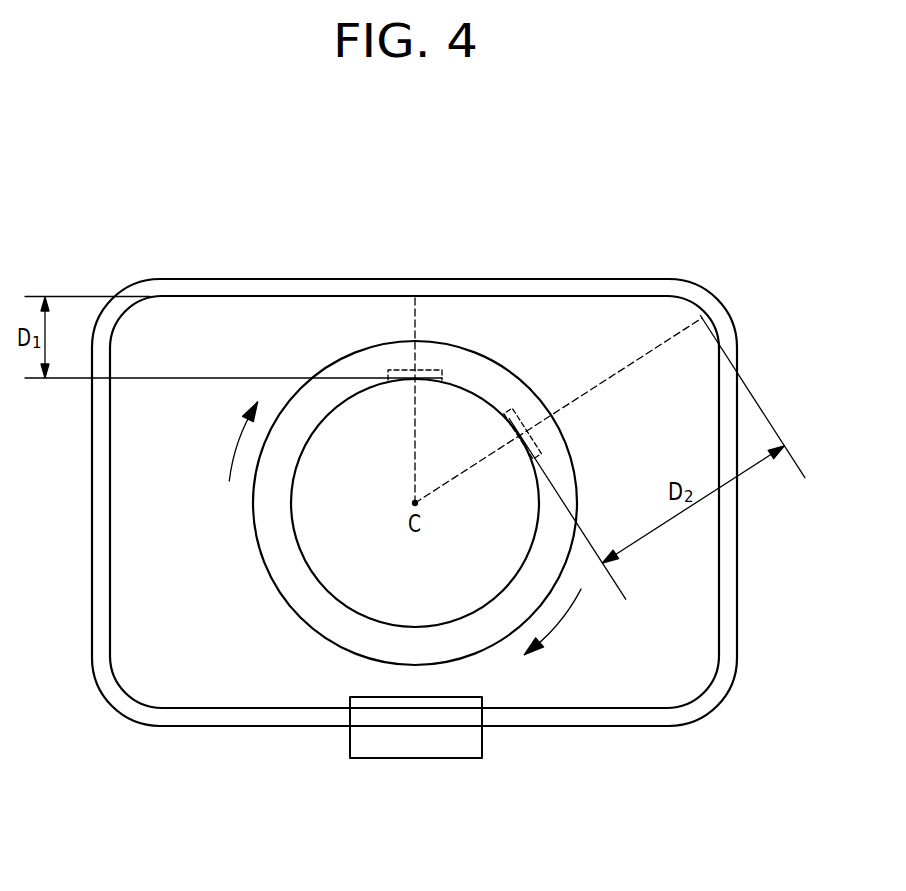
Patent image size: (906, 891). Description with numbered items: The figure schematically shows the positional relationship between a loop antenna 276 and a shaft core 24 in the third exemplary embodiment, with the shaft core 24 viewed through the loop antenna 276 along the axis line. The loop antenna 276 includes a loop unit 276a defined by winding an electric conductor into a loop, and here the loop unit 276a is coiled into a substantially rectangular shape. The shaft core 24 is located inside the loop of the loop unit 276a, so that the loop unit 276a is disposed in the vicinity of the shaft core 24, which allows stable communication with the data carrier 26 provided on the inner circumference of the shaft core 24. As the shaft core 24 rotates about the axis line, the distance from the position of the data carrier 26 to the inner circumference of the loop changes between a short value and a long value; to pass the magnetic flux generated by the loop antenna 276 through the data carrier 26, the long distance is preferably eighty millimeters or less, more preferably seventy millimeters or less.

The shaft core 24 is at (271, 526).
The data carrier 26 is at (423, 370).
The loop antenna 276 is at (707, 197).
The loop unit 276a is at (523, 294).